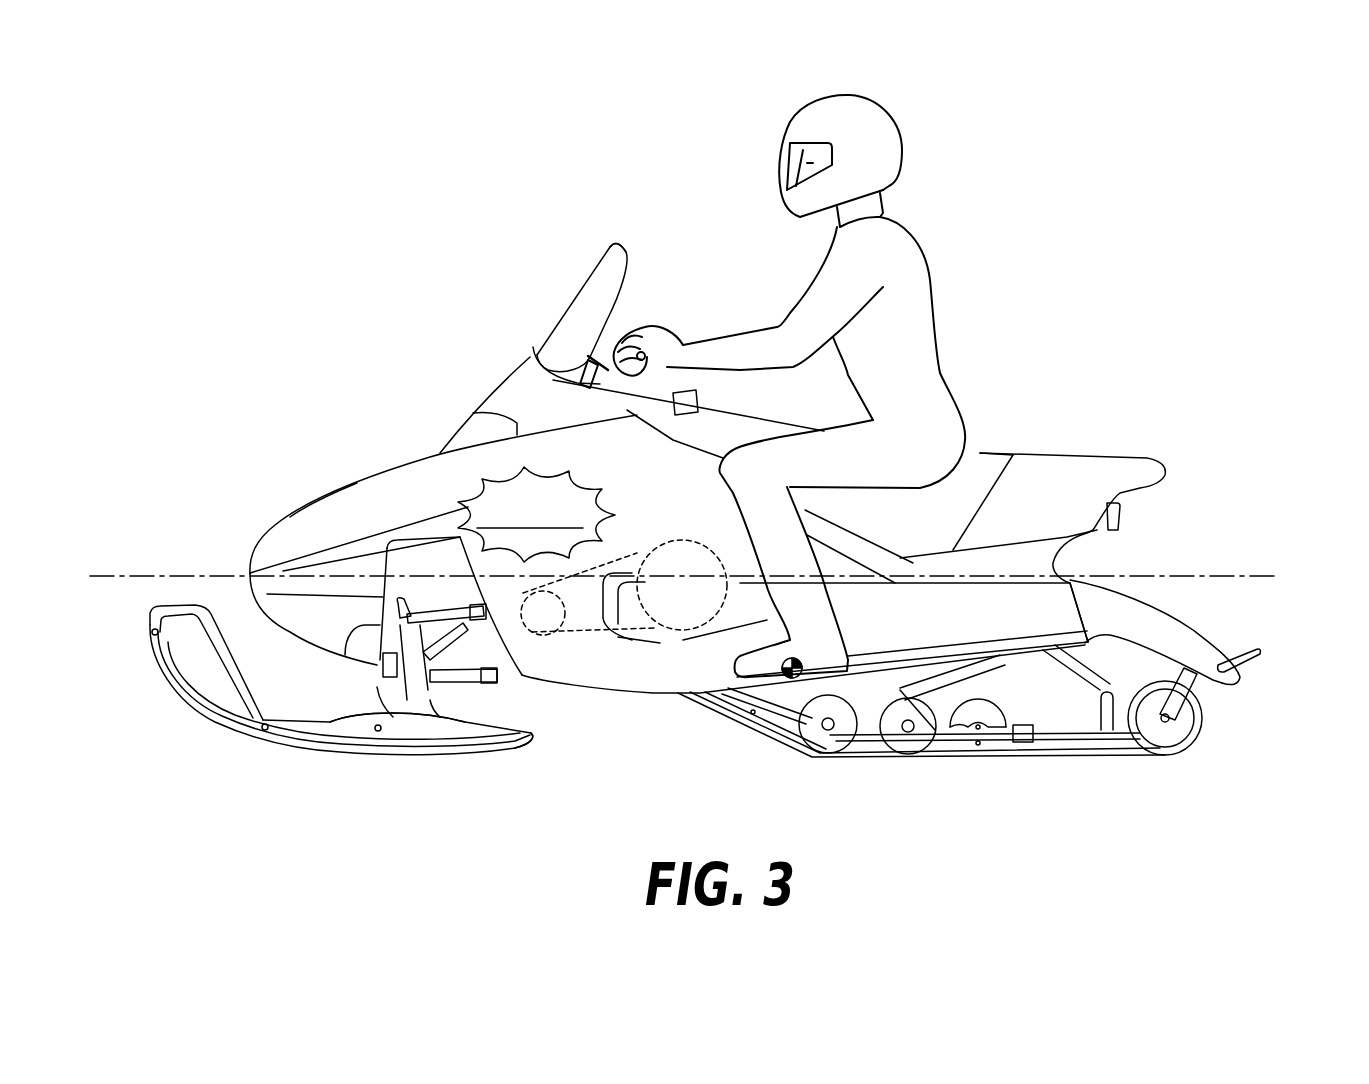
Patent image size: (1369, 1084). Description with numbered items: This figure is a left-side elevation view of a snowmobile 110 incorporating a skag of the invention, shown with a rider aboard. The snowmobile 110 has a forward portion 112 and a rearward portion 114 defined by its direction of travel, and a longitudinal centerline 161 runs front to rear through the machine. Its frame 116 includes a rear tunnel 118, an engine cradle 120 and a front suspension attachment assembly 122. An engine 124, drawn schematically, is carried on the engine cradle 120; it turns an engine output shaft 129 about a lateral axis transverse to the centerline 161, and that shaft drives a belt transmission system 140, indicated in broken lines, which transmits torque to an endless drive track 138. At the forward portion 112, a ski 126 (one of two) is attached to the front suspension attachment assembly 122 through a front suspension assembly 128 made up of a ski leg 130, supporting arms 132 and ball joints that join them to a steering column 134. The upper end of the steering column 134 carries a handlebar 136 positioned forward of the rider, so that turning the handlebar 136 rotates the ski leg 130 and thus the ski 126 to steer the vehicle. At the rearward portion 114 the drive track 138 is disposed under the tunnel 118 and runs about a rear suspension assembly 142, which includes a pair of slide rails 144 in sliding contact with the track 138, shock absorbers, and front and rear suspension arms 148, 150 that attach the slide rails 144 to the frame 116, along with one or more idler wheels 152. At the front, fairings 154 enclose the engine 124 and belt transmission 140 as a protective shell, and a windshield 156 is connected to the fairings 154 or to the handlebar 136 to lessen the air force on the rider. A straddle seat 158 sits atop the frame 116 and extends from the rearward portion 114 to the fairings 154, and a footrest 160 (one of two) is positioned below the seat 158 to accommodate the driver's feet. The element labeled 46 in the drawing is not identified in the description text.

The shock absorber 46 is at (990, 688).
The snowmobile 110 is at (456, 358).
The forward portion 112 is at (289, 499).
The rearward portion 114 is at (1076, 438).
The frame 116 is at (1071, 579).
The rear tunnel 118 is at (936, 634).
The engine cradle 120 is at (635, 694).
The front suspension attachment assembly 122 is at (378, 663).
The engine 124 is at (488, 478).
The ski 126 is at (370, 758).
The front suspension assembly 128 is at (512, 698).
The engine output shaft 129 is at (540, 615).
The ski leg 130 is at (445, 730).
The supporting arms 132 is at (525, 734).
The steering column 134 is at (535, 350).
The handlebar 136 is at (625, 313).
The endless drive track 138 is at (766, 753).
The belt transmission system 140 is at (606, 640).
The rear suspension assembly 142 is at (943, 742).
The slide rails 144 is at (1080, 757).
The front suspension arm 148 is at (913, 754).
The rear suspension arm 150 is at (1164, 758).
The idler wheel 152 is at (1203, 720).
The fairings 154 is at (355, 484).
The windshield 156 is at (609, 246).
The straddle seat 158 is at (988, 462).
The footrest 160 is at (800, 678).
The longitudinal centerline 161 is at (201, 577).